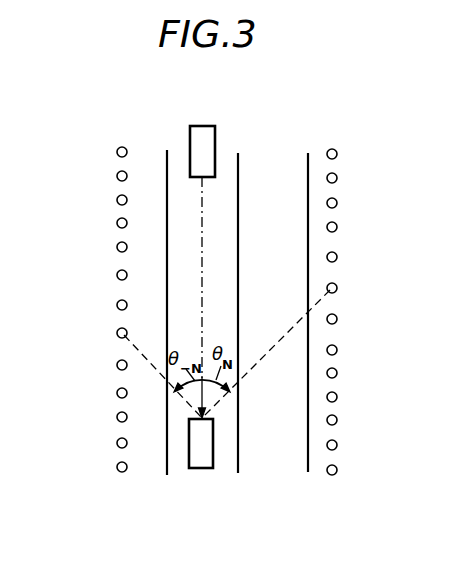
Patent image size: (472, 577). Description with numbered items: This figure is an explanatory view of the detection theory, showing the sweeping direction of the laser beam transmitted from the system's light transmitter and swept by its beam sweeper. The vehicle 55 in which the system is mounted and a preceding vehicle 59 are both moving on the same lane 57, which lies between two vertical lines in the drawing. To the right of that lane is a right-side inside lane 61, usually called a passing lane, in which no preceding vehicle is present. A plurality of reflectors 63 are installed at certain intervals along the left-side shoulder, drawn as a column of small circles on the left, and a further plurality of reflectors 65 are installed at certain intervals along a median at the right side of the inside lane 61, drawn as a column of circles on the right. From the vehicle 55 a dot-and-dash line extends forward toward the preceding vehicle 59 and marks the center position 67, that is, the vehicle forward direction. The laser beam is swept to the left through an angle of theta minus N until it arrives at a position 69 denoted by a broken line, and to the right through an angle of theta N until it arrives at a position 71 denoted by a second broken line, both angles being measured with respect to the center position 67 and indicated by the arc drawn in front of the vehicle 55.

The vehicle 55 is at (199, 470).
The lane 57 is at (177, 463).
The preceding vehicle 59 is at (205, 137).
The inside lane 61 is at (275, 452).
The reflectors 63 is at (117, 200).
The reflectors 65 is at (337, 203).
The center position 67 is at (203, 264).
The position 69 is at (150, 365).
The position 71 is at (253, 363).